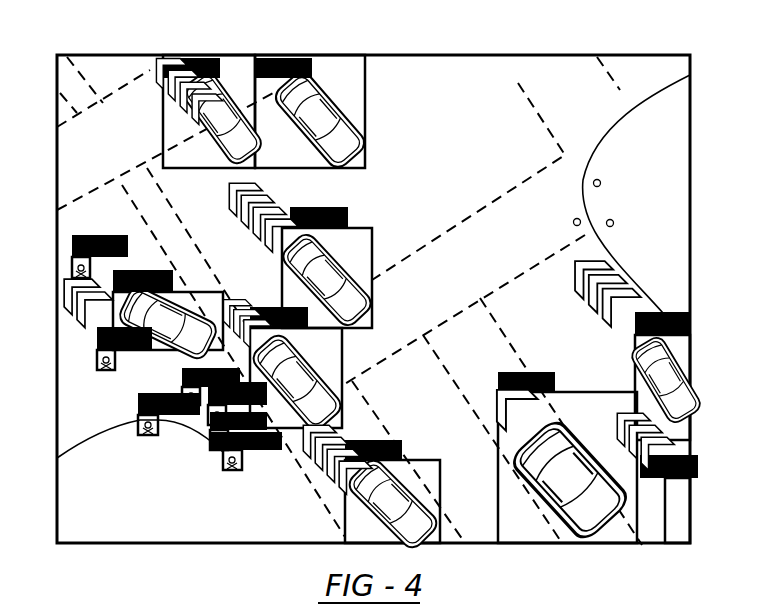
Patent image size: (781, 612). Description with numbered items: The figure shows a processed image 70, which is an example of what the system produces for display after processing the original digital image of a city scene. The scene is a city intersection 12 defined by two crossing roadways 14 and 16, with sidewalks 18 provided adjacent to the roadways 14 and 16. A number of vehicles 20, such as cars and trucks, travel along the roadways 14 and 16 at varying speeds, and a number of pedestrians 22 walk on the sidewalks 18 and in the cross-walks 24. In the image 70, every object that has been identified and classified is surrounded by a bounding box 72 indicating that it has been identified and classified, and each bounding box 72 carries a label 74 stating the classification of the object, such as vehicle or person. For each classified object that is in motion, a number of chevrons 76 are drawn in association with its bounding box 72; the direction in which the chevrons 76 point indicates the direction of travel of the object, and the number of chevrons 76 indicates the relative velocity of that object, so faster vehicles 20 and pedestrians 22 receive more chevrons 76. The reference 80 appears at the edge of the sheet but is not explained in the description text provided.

The city intersection 12 is at (477, 82).
The roadway 14 is at (470, 487).
The roadway 16 is at (80, 397).
The sidewalk 18 is at (665, 255).
The vehicle 20 is at (588, 508).
The pedestrian 22 is at (140, 432).
The cross-walk 24 is at (500, 220).
The image 70 is at (667, 47).
The bounding box 72 is at (366, 90).
The label 74 is at (333, 207).
The chevron 76 is at (72, 302).
The display 80 is at (708, 611).